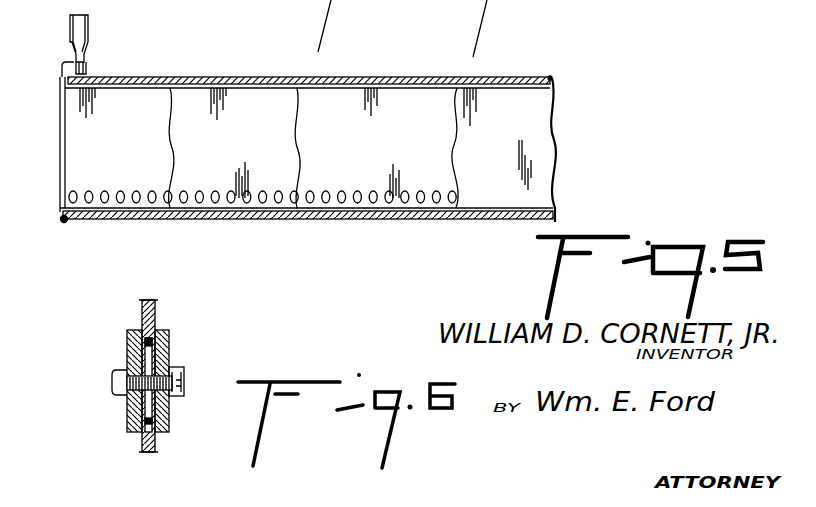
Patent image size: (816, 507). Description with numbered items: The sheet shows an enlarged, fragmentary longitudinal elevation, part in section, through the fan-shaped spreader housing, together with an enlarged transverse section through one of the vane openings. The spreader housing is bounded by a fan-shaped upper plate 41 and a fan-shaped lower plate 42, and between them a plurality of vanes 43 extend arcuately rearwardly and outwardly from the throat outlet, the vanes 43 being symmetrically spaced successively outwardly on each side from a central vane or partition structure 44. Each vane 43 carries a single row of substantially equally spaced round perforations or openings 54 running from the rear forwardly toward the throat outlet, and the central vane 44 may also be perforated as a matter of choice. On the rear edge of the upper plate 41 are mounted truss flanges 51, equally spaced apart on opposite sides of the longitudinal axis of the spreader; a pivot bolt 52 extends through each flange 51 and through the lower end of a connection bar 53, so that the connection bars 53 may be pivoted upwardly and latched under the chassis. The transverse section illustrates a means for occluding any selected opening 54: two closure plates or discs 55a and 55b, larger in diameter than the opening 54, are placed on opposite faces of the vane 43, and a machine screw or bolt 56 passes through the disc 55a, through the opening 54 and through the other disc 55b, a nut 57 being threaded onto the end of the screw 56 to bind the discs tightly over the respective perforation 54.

In FIG. 5, the upper plate 41 is at (262, 77).
In FIG. 5, the lower plate 42 is at (493, 221).
In FIG. 5, the vanes 43 is at (147, 123).
In FIG. 6, the vanes 43 is at (140, 312).
In FIG. 5, the central vane 44 is at (494, 132).
In FIG. 5, the truss flanges 51 is at (70, 58).
In FIG. 5, the pivot bolt 52 is at (84, 68).
In FIG. 5, the connection bar 53 is at (70, 26).
In FIG. 5, the openings 54 is at (274, 191).
In FIG. 6, the openings 54 is at (128, 356).
In FIG. 6, the closure disc 55a is at (127, 409).
In FIG. 6, the closure disc 55b is at (171, 409).
In FIG. 6, the machine screw 56 is at (112, 381).
In FIG. 6, the nut 57 is at (171, 368).